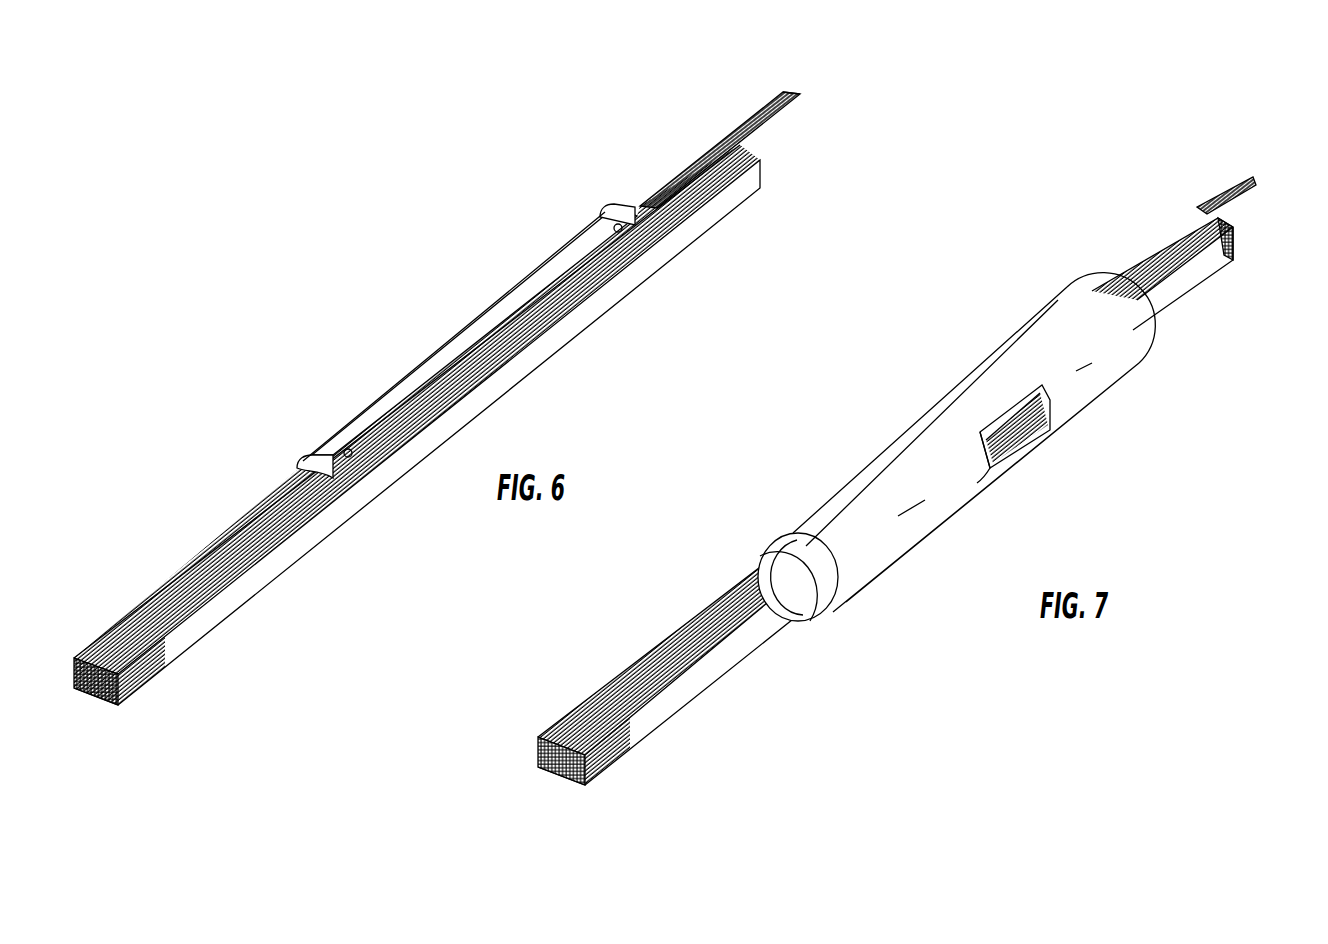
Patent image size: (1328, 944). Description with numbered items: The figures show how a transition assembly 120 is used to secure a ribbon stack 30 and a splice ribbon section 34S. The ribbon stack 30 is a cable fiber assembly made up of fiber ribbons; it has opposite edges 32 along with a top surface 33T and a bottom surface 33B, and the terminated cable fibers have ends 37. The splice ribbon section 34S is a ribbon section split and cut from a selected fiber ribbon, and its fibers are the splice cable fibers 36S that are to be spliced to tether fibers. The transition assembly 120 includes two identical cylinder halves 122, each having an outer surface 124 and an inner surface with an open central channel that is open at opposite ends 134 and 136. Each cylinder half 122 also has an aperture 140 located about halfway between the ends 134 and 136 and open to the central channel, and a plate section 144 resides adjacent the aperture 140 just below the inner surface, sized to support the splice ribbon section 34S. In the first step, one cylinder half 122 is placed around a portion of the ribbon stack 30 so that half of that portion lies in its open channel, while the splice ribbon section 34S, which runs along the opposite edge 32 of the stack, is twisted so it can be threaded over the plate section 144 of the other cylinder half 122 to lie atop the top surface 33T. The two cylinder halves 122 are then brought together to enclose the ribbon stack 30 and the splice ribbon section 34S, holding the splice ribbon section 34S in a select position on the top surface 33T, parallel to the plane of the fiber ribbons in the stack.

In FIG. 6, the ribbon stack 30 is at (132, 558).
In FIG. 7, the ribbon stack 30 is at (1075, 259).
In FIG. 6, the opposite edge 32 is at (448, 451).
In FIG. 7, the opposite edge 32 is at (889, 529).
In FIG. 6, the top surface 33T is at (116, 660).
In FIG. 7, the top surface 33T is at (573, 728).
In FIG. 6, the bottom surface 33B is at (100, 716).
In FIG. 7, the bottom surface 33B is at (570, 800).
In FIG. 6, the splice ribbon section 34S is at (774, 147).
In FIG. 7, the splice ribbon section 34S is at (1150, 244).
In FIG. 6, the splice cable fibers 36S is at (744, 143).
In FIG. 6, the ends 37 is at (803, 92).
In FIG. 7, the ends 37 is at (1256, 180).
In FIG. 7, the transition assembly 120 is at (995, 439).
In FIG. 6, the cylinder half 122 is at (552, 256).
In FIG. 7, the cylinder half 122 is at (974, 454).
In FIG. 7, the outer surface 124 is at (1106, 396).
In FIG. 7, the end 134 is at (818, 612).
In FIG. 7, the end 136 is at (1140, 341).
In FIG. 7, the aperture 140 is at (1055, 453).
In FIG. 7, the plate section 144 is at (1016, 462).